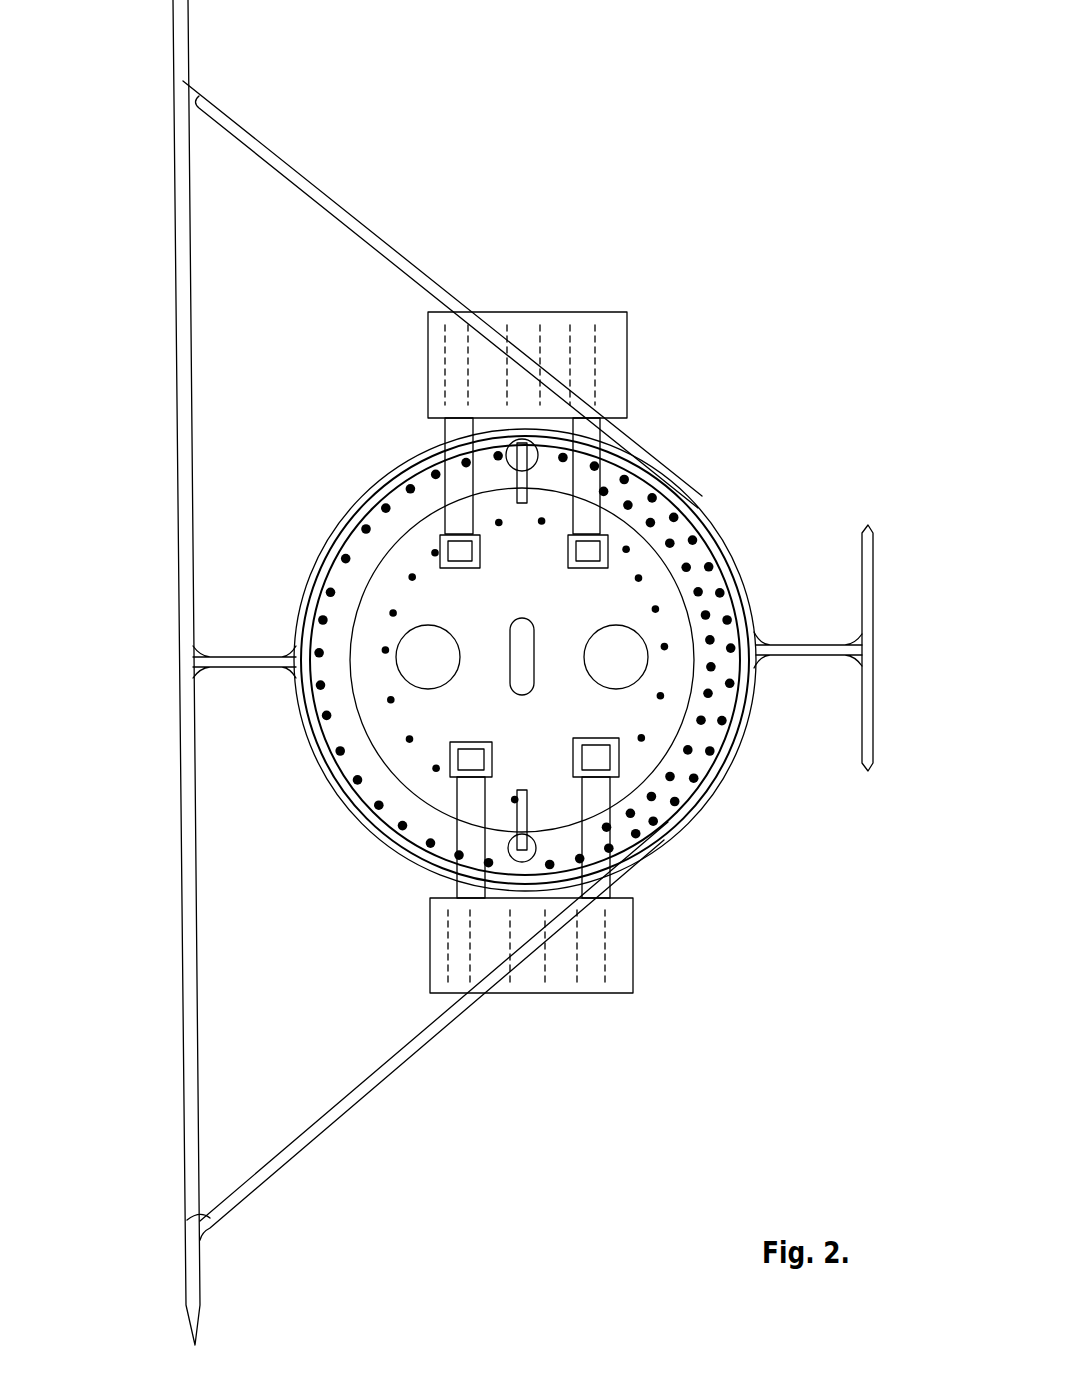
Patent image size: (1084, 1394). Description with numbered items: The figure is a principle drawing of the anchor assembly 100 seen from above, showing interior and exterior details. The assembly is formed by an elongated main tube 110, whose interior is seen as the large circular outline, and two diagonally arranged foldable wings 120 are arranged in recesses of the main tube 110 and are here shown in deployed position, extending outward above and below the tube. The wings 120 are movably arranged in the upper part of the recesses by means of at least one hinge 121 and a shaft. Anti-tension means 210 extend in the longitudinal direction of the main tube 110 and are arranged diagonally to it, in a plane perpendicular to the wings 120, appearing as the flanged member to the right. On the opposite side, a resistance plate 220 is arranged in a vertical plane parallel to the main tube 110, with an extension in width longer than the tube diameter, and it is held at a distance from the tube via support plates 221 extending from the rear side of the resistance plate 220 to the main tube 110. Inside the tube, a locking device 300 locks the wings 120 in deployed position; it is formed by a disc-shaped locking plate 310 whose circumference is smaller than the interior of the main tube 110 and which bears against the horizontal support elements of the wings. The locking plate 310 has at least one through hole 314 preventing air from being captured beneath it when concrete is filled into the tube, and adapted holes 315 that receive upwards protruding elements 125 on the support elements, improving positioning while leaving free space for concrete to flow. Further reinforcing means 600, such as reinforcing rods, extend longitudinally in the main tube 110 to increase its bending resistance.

The anchor assembly 100 is at (712, 192).
The elongated main tube 110 is at (723, 530).
The foldable wings 120 is at (607, 345).
The hinge 121 is at (640, 890).
The upwards protruding elements 125 is at (472, 762).
The anti-tension means 210 is at (872, 531).
The resistance plate 220 is at (168, 165).
The support plates 221 is at (340, 208).
The locking device 300 is at (652, 783).
The locking plate 310 is at (667, 724).
The through hole 314 is at (410, 645).
The adapted holes 315 is at (450, 753).
The reinforcing means 600 is at (676, 520).